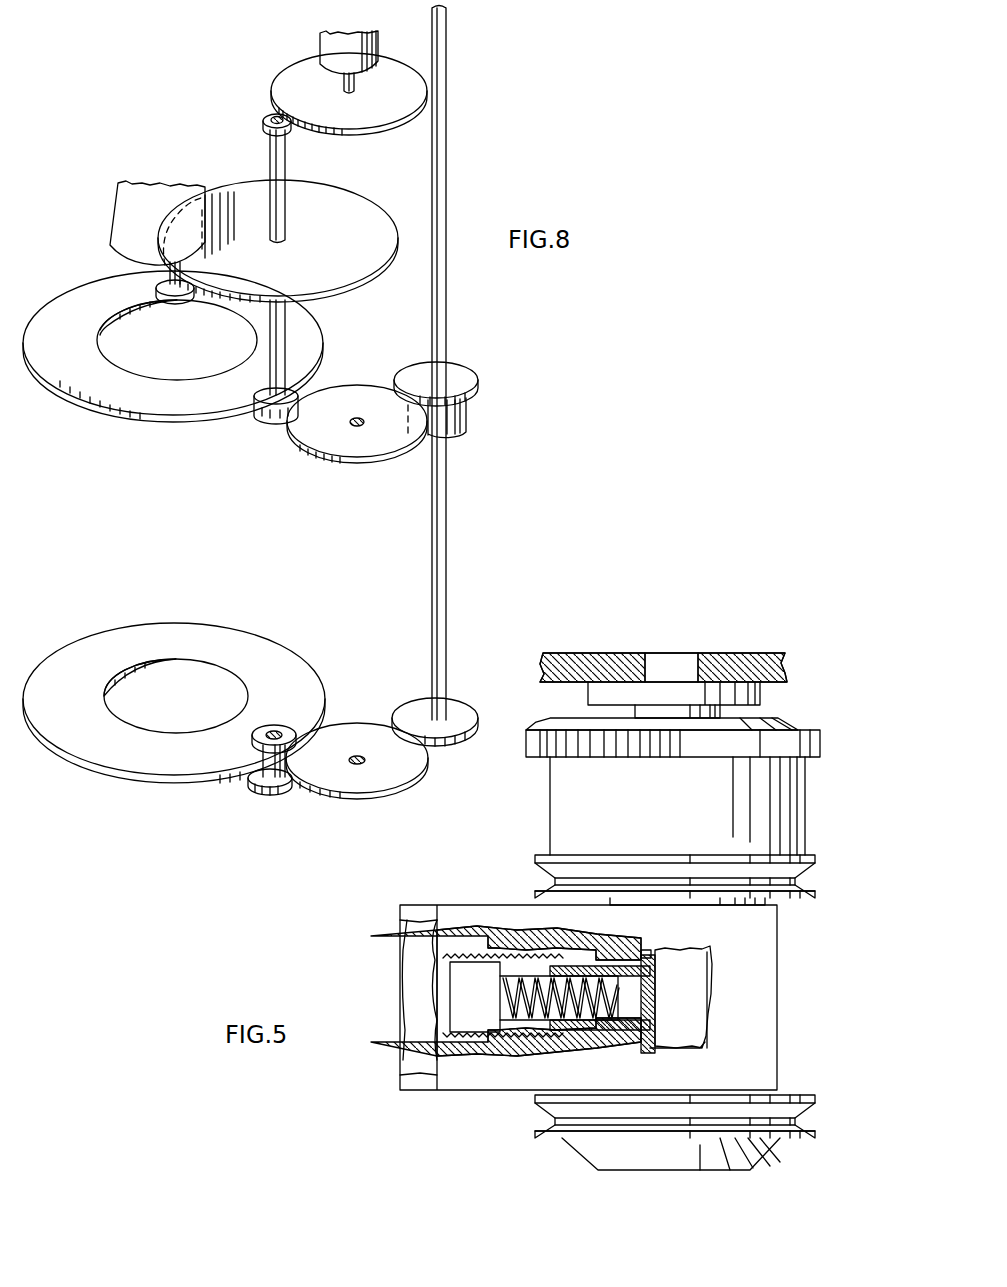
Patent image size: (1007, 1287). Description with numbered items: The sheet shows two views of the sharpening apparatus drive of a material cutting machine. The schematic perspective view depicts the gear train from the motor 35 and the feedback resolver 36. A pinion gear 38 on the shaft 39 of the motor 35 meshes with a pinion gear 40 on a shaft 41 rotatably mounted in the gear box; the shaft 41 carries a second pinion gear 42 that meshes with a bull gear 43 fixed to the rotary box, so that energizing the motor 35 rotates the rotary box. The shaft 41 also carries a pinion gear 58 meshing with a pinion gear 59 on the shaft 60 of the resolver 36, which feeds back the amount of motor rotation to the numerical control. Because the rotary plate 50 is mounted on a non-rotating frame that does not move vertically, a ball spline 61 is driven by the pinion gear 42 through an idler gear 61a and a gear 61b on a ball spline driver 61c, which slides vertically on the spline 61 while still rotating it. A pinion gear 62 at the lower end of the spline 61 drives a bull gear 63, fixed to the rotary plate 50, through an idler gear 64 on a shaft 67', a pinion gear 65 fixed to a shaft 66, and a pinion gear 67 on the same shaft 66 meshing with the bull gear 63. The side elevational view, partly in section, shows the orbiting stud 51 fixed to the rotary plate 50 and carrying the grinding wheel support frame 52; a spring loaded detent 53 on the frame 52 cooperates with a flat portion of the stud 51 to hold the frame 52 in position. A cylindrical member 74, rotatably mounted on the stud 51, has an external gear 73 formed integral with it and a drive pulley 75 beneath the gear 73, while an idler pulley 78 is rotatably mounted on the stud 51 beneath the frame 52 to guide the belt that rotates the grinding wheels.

In FIG. 8, the motor 35 is at (118, 224).
In FIG. 8, the feedback resolver 36 is at (320, 42).
In FIG. 8, the pinion gear 38 is at (170, 298).
In FIG. 8, the shaft 39 is at (154, 284).
In FIG. 8, the pinion gear 40 is at (308, 285).
In FIG. 8, the shaft 41 is at (269, 158).
In FIG. 8, the second pinion gear 42 is at (268, 420).
In FIG. 8, the bull gear 43 is at (122, 418).
In FIG. 8, the pinion gear 58 is at (262, 125).
In FIG. 8, the pinion gear 59 is at (389, 114).
In FIG. 8, the shaft 60 is at (344, 85).
In FIG. 8, the ball spline 61 is at (447, 329).
In FIG. 8, the idler gear 61a is at (336, 462).
In FIG. 8, the gear 61b is at (477, 387).
In FIG. 8, the ball spline driver 61c is at (468, 418).
In FIG. 8, the pinion gear 62 is at (470, 738).
In FIG. 8, the bull gear 63 is at (94, 716).
In FIG. 8, the idler gear 64 is at (370, 804).
In FIG. 8, the pinion gear 65 is at (250, 746).
In FIG. 8, the shaft 66 is at (274, 732).
In FIG. 8, the pinion gear 67 is at (260, 790).
In FIG. 8, the shaft 67' is at (365, 721).
In FIG. 5, the rotary plate 50 is at (590, 652).
In FIG. 5, the orbiting stud 51 is at (676, 650).
In FIG. 5, the grinding wheel support frame 52 is at (404, 915).
In FIG. 5, the spring loaded detent 53 is at (648, 958).
In FIG. 5, the external gear 73 is at (570, 757).
In FIG. 5, the cylindrical member 74 is at (677, 822).
In FIG. 5, the drive pulley 75 is at (535, 857).
In FIG. 5, the idler pulley 78 is at (532, 1103).